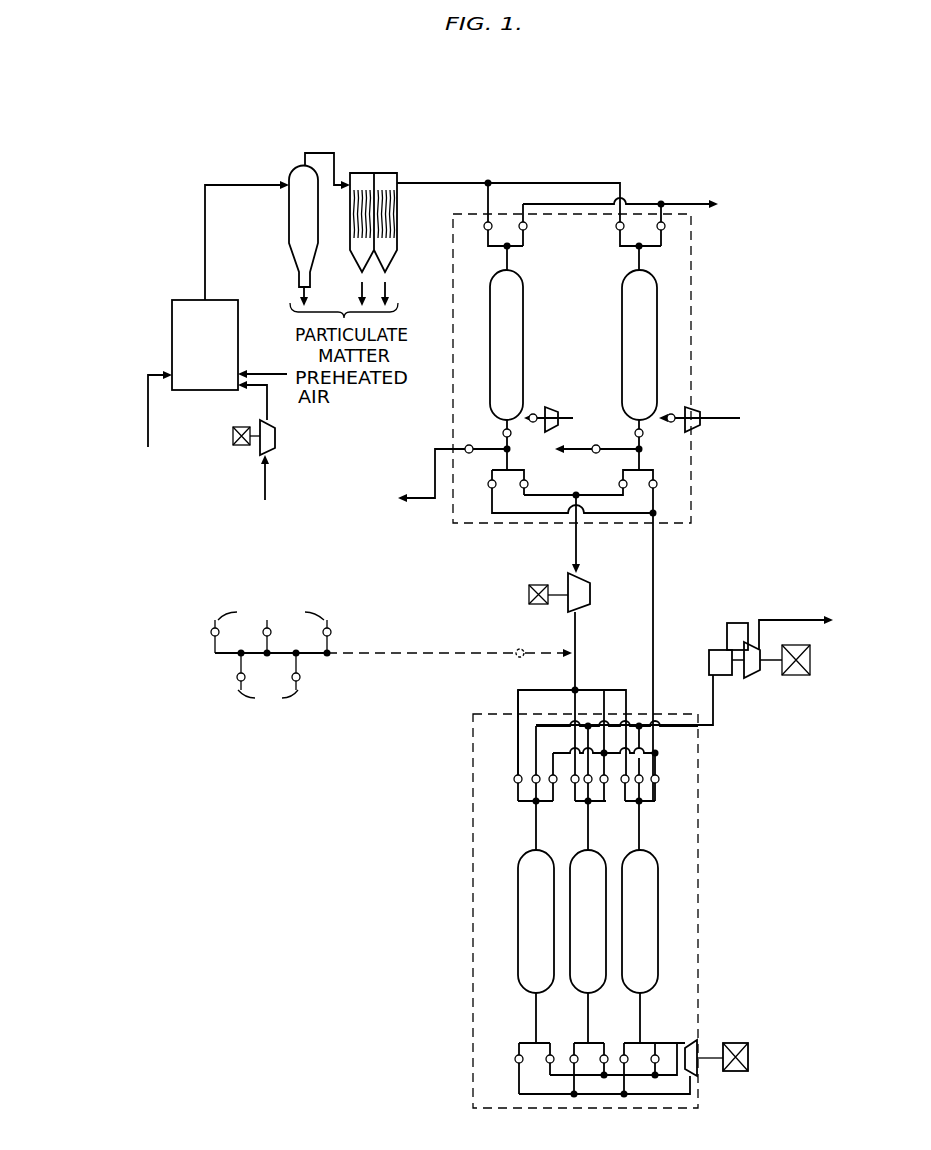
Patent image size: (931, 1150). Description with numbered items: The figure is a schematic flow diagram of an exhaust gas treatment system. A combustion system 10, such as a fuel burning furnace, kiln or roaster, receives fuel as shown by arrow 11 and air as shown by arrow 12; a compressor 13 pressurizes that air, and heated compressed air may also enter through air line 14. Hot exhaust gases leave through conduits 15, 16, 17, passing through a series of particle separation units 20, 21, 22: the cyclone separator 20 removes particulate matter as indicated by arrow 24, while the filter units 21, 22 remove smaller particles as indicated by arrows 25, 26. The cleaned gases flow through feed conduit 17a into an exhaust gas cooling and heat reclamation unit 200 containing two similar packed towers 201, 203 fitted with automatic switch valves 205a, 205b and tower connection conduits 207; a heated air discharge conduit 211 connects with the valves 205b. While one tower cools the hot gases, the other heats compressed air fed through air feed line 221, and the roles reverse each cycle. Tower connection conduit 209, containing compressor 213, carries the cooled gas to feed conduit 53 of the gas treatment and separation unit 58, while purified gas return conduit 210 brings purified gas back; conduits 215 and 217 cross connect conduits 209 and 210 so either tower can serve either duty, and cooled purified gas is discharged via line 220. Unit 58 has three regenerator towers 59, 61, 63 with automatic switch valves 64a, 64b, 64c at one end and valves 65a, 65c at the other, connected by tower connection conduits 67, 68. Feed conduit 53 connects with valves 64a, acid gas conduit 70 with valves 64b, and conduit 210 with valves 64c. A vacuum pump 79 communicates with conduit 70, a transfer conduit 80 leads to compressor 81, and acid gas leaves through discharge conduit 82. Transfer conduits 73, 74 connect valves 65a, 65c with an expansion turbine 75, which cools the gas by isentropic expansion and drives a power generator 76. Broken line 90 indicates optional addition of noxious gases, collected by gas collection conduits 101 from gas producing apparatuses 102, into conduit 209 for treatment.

The combustion system 10 is at (216, 356).
The fuel supply arrow 11 is at (150, 430).
The air supply 12 is at (252, 400).
The compressor 13 is at (276, 436).
The air line 14 is at (265, 371).
The conduit 15 is at (205, 219).
The conduit 16 is at (320, 150).
The conduit 17 is at (437, 181).
The feed conduit 17a is at (532, 181).
The cyclone separator 20 is at (287, 160).
The separation unit 21 is at (359, 259).
The separation unit 22 is at (391, 258).
The particulate matter arrow 24 is at (301, 292).
The particle removal arrow 25 is at (357, 292).
The particle removal arrow 26 is at (391, 292).
The gas feeder conduit 53 is at (518, 690).
The gas treatment and separation unit 58 is at (700, 863).
The packed tower 59 is at (547, 935).
The packed tower 61 is at (599, 935).
The packed tower 63 is at (651, 935).
The automatic switch valve 64a is at (518, 776).
The automatic switch valve 64b is at (533, 783).
The automatic switch valve 64c is at (550, 803).
The automatic switch valve 65a is at (622, 1054).
The automatic switch valve 65c is at (656, 1054).
The tower connection conduit 67 is at (660, 844).
The tower connection conduit 68 is at (534, 1018).
The acid gas conduit 70 is at (603, 690).
The transfer conduit 73 is at (656, 1096).
The transfer conduit 74 is at (688, 1043).
The expansion turbine 75 is at (700, 1052).
The power generator 76 is at (745, 1043).
The vacuum pump 79 is at (709, 660).
The transfer conduit 80 is at (733, 623).
The compressor 81 is at (752, 679).
The acid gas discharge conduit 82 is at (770, 618).
The broken line 90 is at (523, 658).
The gas collection conduits 101 is at (219, 634).
The gas producing apparatuses 102 is at (305, 612).
The exhaust gas cooling and heat reclamation unit 200 is at (694, 322).
The packed tower 201 is at (521, 352).
The packed tower 203 is at (654, 352).
The automatic switch valve 205a is at (478, 249).
The automatic switch valve 205b is at (528, 229).
The tower connection conduit 207 is at (512, 258).
The tower connection conduit 209 is at (578, 540).
The purified gas return conduit 210 is at (656, 587).
The heated air discharge conduit 211 is at (637, 203).
The compressor 213 is at (591, 591).
The cross connection conduit 215 is at (603, 494).
The cross connection conduit 217 is at (540, 512).
The purified gas discharge line 220 is at (404, 495).
The air feed line 221 is at (565, 406).